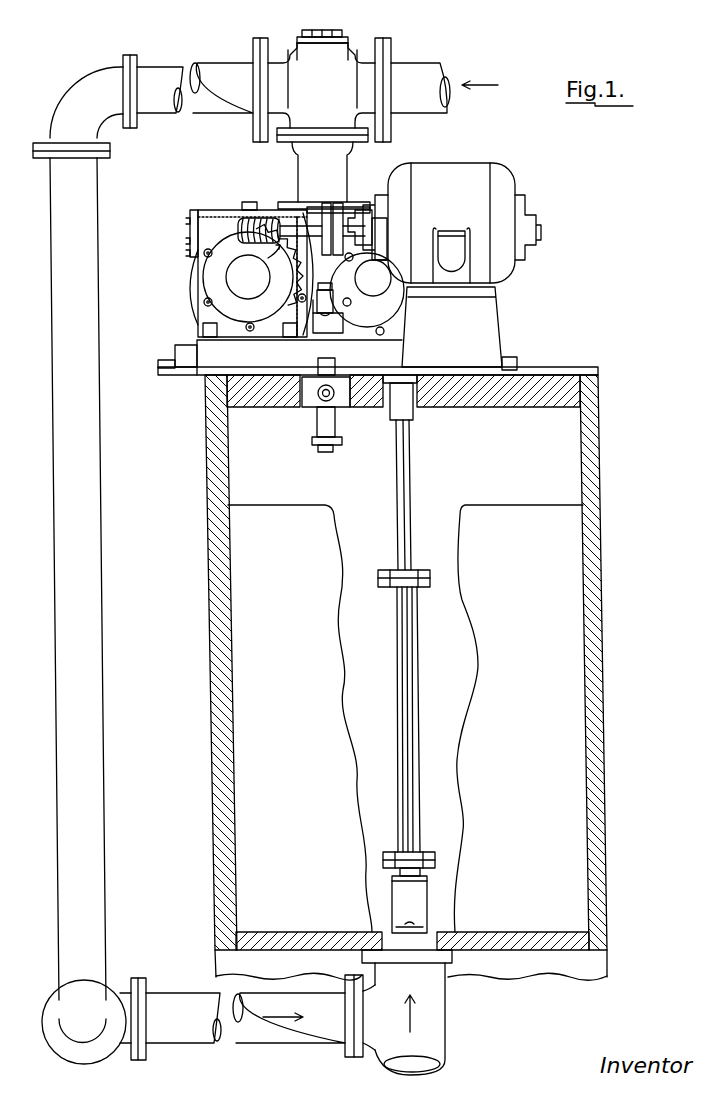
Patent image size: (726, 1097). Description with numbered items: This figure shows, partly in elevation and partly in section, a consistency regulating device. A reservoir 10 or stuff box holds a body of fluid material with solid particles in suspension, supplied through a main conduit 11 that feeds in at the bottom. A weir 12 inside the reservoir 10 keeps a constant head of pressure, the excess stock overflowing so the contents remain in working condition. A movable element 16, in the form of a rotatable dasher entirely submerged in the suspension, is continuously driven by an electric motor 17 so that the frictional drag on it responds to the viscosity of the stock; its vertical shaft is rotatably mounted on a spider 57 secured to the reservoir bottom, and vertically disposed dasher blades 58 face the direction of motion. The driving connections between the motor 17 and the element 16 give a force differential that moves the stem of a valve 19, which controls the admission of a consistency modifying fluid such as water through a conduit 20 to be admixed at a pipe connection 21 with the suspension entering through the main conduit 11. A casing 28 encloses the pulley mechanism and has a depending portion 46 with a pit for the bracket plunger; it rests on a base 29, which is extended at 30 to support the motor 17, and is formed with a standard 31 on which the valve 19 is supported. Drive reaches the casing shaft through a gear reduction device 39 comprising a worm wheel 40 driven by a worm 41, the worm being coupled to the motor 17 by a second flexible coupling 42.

The reservoir 10 is at (600, 466).
The main conduit 11 is at (448, 1024).
The weir 12 is at (497, 505).
The movable element 16 is at (419, 633).
The electric motor 17 is at (490, 163).
The valve 19 is at (342, 58).
The conduit 20 is at (423, 62).
The pipe connection 21 is at (313, 1044).
The casing 28 is at (393, 308).
The base 29 is at (380, 353).
The extension of base 30 is at (495, 329).
The standard 31 is at (318, 338).
The gear reduction device 39 is at (210, 279).
The worm wheel 40 is at (246, 249).
The worm 41 is at (247, 243).
The second flexible coupling 42 is at (340, 203).
The depending portion of casing 46 is at (336, 426).
The spider 57 is at (420, 901).
The dasher blades 58 is at (417, 824).